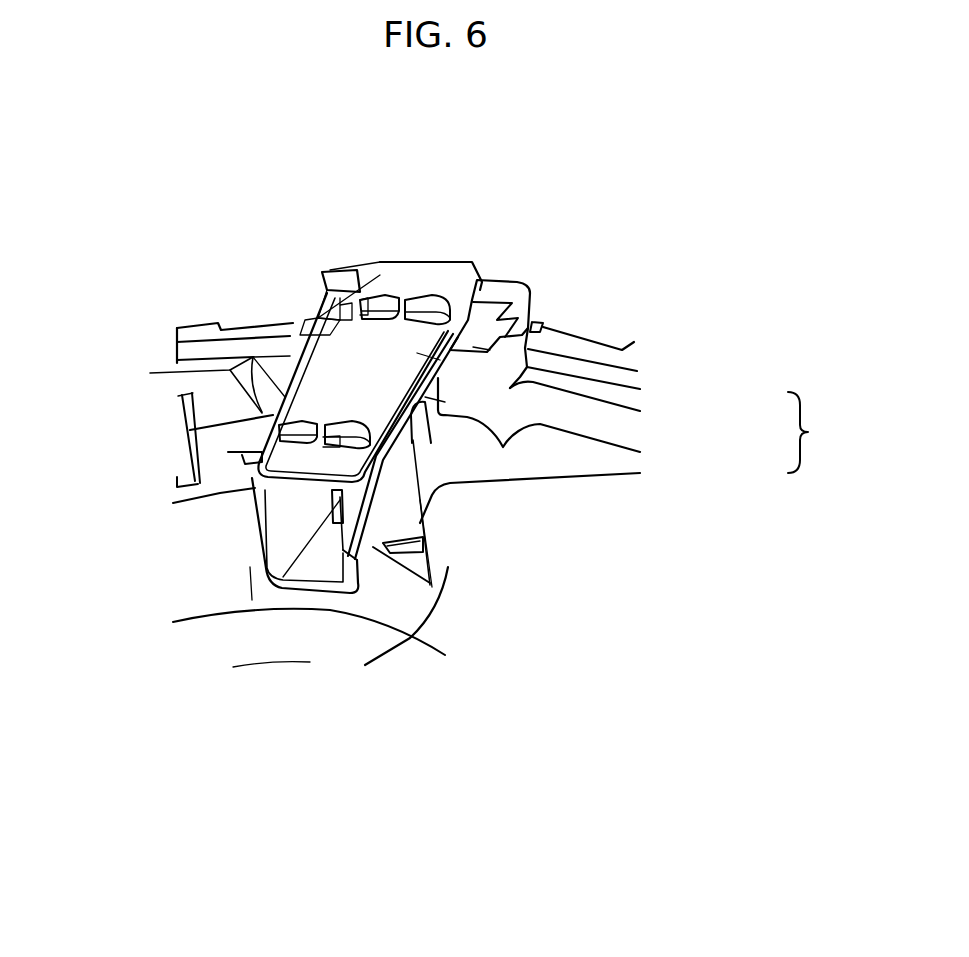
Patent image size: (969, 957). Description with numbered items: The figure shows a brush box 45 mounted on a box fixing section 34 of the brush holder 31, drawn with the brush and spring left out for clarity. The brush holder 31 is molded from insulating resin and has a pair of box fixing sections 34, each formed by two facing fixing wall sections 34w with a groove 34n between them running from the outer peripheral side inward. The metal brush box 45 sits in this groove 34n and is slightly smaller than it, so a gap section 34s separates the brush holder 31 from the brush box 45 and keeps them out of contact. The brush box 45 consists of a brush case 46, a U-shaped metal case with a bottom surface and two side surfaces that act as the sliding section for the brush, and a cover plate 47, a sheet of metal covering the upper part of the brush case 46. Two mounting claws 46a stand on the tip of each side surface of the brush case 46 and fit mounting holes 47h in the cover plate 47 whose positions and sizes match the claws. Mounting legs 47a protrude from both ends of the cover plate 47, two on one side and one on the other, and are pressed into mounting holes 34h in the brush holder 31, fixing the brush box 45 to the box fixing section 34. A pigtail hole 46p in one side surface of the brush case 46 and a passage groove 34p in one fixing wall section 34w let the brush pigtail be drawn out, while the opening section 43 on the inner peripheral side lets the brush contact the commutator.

The brush holder 31 is at (202, 322).
The box fixing section 34 is at (400, 260).
The mounting hole 34h is at (320, 313).
The mounting leg 47a is at (340, 317).
The mounting hole 47h is at (363, 317).
The mounting claw 46a is at (390, 302).
The opening section 43 is at (283, 523).
The cover plate 47 is at (417, 355).
The brush case 46 is at (425, 397).
The brush box 45 is at (848, 445).
The pigtail hole 46p is at (410, 438).
The passage groove 34p is at (460, 485).
The fixing wall section 34w is at (250, 567).
The groove 34n is at (341, 587).
The gap section 34s is at (340, 595).